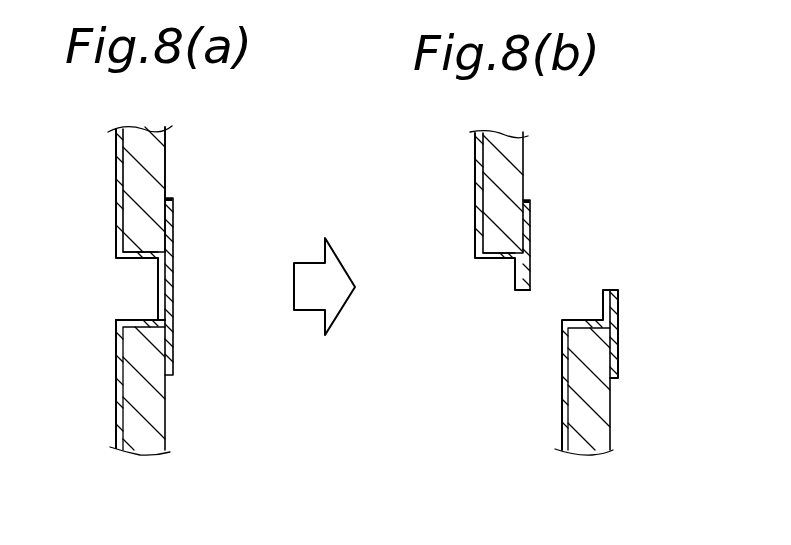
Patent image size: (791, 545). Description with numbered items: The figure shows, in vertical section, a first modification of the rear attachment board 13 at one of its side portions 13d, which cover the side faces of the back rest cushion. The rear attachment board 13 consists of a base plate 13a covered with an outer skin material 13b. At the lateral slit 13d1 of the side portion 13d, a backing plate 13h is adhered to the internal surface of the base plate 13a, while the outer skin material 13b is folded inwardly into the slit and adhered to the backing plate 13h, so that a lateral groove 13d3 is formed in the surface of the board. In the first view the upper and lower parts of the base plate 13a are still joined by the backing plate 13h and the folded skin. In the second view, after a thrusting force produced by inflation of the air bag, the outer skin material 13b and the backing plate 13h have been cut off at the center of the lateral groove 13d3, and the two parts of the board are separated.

In FIG. 8A, the rear attachment board 13 is at (112, 175).
In FIG. 8B, the rear attachment board 13 is at (468, 176).
In FIG. 8A, the base plate 13a is at (160, 170).
In FIG. 8B, the base plate 13a is at (514, 180).
In FIG. 8A, the outer skin material 13b is at (123, 422).
In FIG. 8B, the outer skin material 13b is at (570, 427).
In FIG. 8A, the backing plate 13h is at (172, 264).
In FIG. 8B, the backing plate 13h is at (528, 265).
In FIG. 8A, the side portion 13d is at (117, 376).
In FIG. 8B, the side portion 13d is at (562, 374).
In FIG. 8A, the lateral slit 13d1 is at (150, 321).
In FIG. 8A, the lateral groove 13d3 is at (141, 258).
In FIG. 8B, the lateral groove 13d3 is at (508, 258).